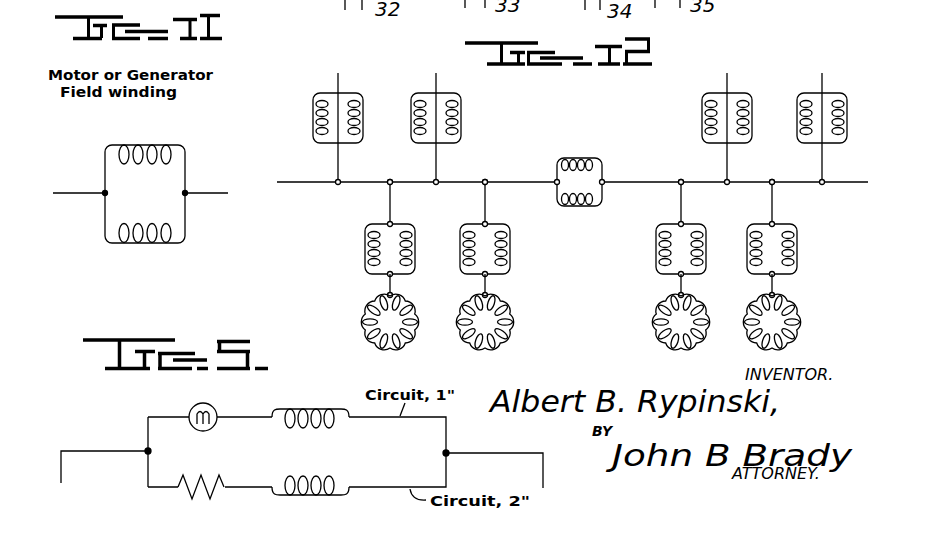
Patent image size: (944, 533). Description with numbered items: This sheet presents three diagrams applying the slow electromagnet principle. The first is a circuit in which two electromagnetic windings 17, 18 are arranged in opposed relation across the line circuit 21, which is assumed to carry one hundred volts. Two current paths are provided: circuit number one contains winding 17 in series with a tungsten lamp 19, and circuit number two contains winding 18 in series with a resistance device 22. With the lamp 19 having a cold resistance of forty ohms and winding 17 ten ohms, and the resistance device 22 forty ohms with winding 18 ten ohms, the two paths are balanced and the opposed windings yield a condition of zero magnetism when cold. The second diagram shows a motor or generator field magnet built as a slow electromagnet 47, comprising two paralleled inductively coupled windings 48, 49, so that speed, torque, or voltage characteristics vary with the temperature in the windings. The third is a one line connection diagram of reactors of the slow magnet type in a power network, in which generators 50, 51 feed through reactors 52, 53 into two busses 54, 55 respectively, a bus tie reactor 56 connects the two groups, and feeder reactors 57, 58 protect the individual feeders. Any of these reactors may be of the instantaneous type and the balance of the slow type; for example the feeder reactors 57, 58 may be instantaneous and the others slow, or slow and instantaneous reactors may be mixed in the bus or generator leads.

In FIG. 11, the slow electromagnet 47 is at (160, 185).
In FIG. 11, the inductively coupled winding 48 is at (129, 152).
In FIG. 11, the inductively coupled winding 49 is at (147, 240).
In FIG. 12, the generator 50 is at (775, 324).
In FIG. 12, the generator 51 is at (388, 323).
In FIG. 12, the reactor 52 is at (795, 265).
In FIG. 12, the reactor 53 is at (372, 281).
In FIG. 12, the bus 54 is at (652, 167).
In FIG. 12, the bus 55 is at (514, 173).
In FIG. 12, the bus tie reactor 56 is at (585, 162).
In FIG. 12, the feeder reactor 57 is at (836, 142).
In FIG. 12, the feeder reactor 58 is at (340, 105).
In FIG. 5, the electromagnetic winding 17 is at (309, 395).
In FIG. 5, the electromagnetic winding 18 is at (321, 481).
In FIG. 5, the tungsten lamp 19 is at (213, 408).
In FIG. 5, the line circuit 21 is at (111, 438).
In FIG. 5, the resistance device 22 is at (200, 483).